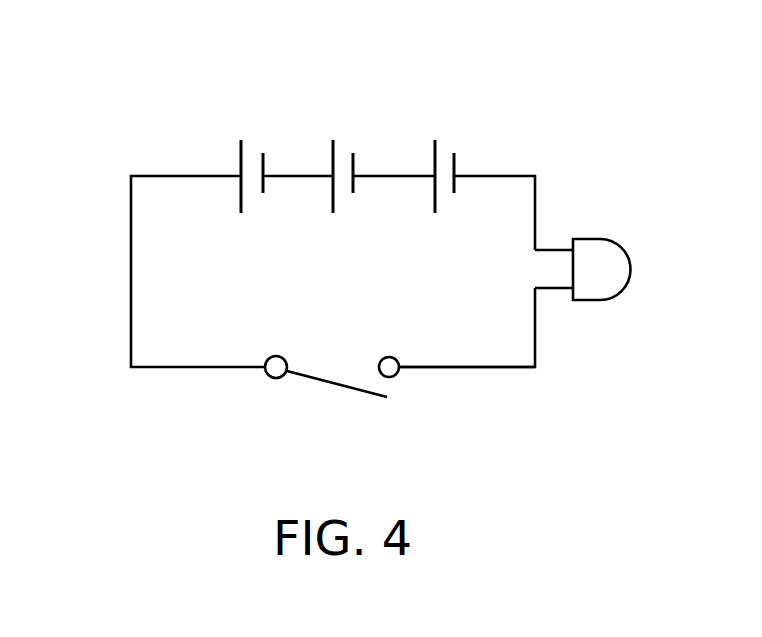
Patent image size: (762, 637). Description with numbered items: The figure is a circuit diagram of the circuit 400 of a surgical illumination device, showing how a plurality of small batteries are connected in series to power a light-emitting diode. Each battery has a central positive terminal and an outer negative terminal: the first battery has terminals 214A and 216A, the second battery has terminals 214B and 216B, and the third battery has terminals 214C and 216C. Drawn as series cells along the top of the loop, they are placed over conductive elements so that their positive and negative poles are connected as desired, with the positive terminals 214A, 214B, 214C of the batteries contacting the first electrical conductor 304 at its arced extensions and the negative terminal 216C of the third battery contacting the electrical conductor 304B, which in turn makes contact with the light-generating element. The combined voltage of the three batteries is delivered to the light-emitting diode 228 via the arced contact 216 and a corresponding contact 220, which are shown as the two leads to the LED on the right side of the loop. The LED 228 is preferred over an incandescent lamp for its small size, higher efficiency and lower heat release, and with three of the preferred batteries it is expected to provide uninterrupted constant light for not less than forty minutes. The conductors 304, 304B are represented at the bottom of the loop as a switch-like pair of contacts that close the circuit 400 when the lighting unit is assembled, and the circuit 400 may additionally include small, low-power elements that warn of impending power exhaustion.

The circuit 400 is at (100, 289).
The central positive terminal 214A is at (238, 155).
The outer negative terminal 216A is at (266, 157).
The central positive terminal 214B is at (330, 157).
The outer negative terminal 216B is at (355, 160).
The central positive terminal 214C is at (432, 157).
The outer negative terminal 216C is at (457, 160).
The contact 220 is at (550, 248).
The arced contact 216 is at (553, 290).
The light-emitting diode 228 is at (632, 260).
The electrical conductor 304 is at (316, 381).
The electrical conductor 304B is at (482, 368).